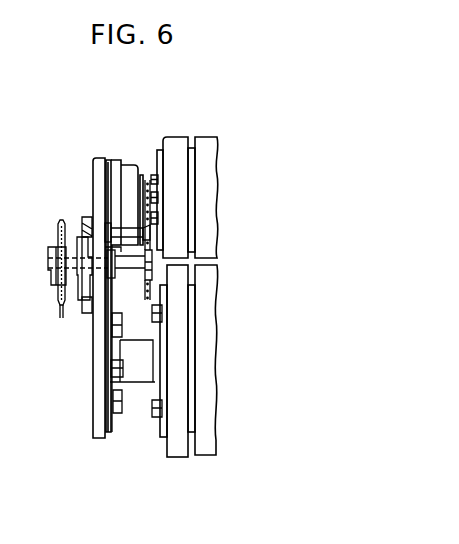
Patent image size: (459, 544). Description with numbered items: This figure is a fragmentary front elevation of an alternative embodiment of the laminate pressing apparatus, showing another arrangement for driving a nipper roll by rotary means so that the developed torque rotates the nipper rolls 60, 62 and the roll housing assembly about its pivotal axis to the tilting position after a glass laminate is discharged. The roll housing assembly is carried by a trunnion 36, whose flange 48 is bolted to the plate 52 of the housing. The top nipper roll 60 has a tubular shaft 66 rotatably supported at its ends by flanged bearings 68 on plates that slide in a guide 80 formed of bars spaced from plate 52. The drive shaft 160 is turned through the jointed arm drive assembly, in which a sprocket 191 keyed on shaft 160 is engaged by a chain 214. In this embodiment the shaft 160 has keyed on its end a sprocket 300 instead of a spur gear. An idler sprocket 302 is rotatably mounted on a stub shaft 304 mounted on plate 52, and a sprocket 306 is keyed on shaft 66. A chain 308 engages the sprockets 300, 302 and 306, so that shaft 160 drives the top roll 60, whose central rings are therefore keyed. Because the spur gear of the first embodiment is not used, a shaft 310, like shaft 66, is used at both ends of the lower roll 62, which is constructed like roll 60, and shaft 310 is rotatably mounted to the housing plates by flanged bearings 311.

The trunnion 36 is at (78, 298).
The flange 48 is at (90, 218).
The plate 52 is at (95, 403).
The nipper roll 60 is at (189, 134).
The nipper roll 62 is at (186, 461).
The tubular shaft 66 is at (154, 189).
The flanged bearing 68 is at (130, 166).
The guide 80 is at (110, 156).
The drive shaft 160 is at (125, 267).
The sprocket 191 is at (58, 249).
The chain 214 is at (59, 316).
The sprocket 300 is at (152, 273).
The idler sprocket 302 is at (148, 236).
The stub shaft 304 is at (130, 228).
The sprocket 306 is at (157, 207).
The chain 308 is at (149, 226).
The shaft 310 is at (140, 341).
The flanged bearing 311 is at (123, 383).